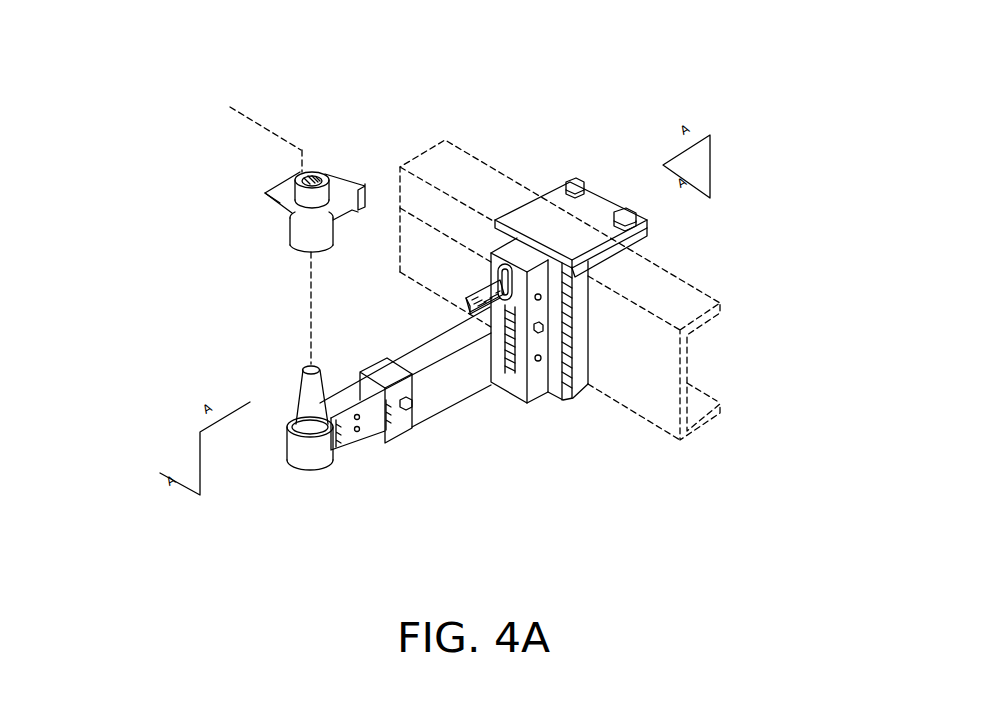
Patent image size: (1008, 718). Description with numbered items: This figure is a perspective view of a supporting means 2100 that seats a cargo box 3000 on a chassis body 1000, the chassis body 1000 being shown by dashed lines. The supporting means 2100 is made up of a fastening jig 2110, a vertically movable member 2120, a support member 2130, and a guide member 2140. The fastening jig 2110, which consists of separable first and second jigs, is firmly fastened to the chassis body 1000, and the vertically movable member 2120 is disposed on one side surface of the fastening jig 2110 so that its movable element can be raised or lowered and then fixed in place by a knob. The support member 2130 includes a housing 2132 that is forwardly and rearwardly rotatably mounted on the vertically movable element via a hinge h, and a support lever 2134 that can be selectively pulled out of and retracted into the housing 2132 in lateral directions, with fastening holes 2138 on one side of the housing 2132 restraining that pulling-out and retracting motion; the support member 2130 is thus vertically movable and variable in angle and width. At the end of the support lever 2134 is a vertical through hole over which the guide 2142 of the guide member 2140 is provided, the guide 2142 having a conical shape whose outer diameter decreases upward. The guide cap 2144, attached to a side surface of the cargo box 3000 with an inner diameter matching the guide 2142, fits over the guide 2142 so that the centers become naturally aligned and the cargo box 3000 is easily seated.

The chassis body 1000 is at (697, 290).
The cargo box 3000 is at (282, 138).
The supporting means 2100 is at (533, 162).
The fastening jig 2110 is at (600, 195).
The vertically movable member 2120 is at (542, 398).
The support member 2130 is at (477, 520).
The housing 2132 is at (440, 412).
The support lever 2134 is at (387, 479).
The fastening holes 2138 is at (399, 376).
The guide member 2140 is at (153, 243).
The guide 2142 is at (244, 389).
The guide cap 2144 is at (290, 228).
The hinge h is at (501, 293).